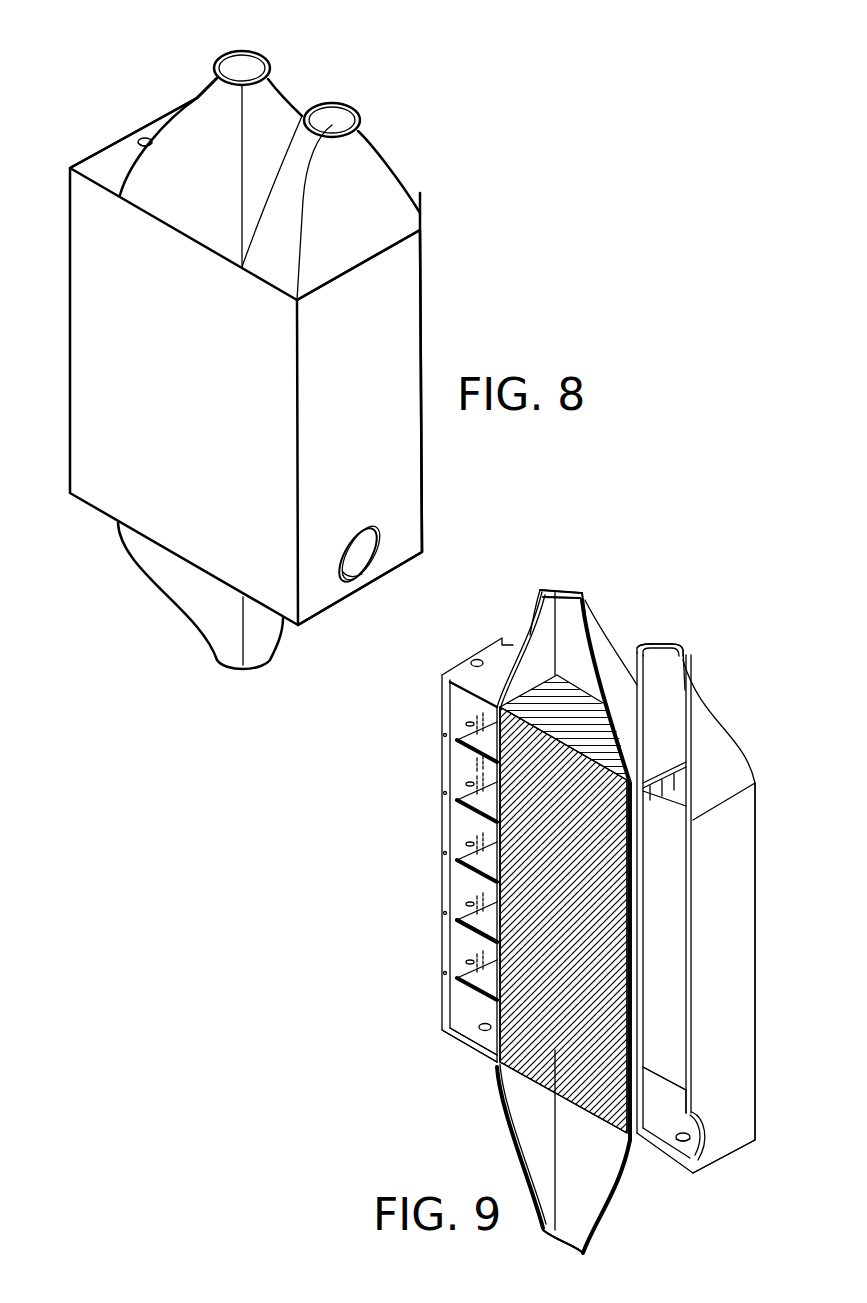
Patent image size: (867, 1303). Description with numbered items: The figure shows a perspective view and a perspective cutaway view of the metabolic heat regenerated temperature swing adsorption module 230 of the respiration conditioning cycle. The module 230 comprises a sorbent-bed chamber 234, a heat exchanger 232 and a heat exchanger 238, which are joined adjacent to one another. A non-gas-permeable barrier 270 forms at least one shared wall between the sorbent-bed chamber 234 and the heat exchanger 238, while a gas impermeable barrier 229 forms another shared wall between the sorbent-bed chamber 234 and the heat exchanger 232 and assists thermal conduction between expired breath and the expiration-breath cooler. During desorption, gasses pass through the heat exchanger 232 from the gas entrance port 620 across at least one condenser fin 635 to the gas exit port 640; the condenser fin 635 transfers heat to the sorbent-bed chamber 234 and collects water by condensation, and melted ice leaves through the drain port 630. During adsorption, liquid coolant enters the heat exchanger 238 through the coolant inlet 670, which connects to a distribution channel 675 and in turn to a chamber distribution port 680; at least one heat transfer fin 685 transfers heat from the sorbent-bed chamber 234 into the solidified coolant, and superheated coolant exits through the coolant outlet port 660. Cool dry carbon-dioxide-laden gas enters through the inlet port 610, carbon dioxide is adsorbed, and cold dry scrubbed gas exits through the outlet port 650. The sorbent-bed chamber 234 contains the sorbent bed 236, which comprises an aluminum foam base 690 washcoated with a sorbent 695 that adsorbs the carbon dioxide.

In FIG. 8, the metabolic heat regenerated temperature swing adsorption module 230 is at (442, 268).
In FIG. 9, the metabolic heat regenerated temperature swing adsorption module 230 is at (712, 672).
In FIG. 8, the heat exchanger 232 is at (407, 423).
In FIG. 9, the heat exchanger 232 is at (710, 1185).
In FIG. 9, the sorbent-bed chamber 234 is at (490, 1110).
In FIG. 9, the sorbent bed 236 is at (583, 1107).
In FIG. 8, the heat exchanger 238 is at (160, 106).
In FIG. 9, the heat exchanger 238 is at (420, 814).
In FIG. 9, the gas impermeable barrier 229 is at (655, 1097).
In FIG. 9, the non-gas-permeable barrier 270 is at (460, 923).
In FIG. 8, the inlet port 610 is at (252, 77).
In FIG. 9, the inlet port 610 is at (573, 590).
In FIG. 8, the gas entrance port 620 is at (332, 120).
In FIG. 9, the gas entrance port 620 is at (677, 648).
In FIG. 9, the drain port 630 is at (683, 1143).
In FIG. 9, the condenser fin 635 is at (638, 785).
In FIG. 8, the gas exit port 640 is at (373, 563).
In FIG. 9, the gas exit port 640 is at (707, 1137).
In FIG. 8, the outlet port 650 is at (233, 667).
In FIG. 9, the outlet port 650 is at (572, 1230).
In FIG. 9, the coolant outlet port 660 is at (450, 1017).
In FIG. 8, the coolant inlet 670 is at (140, 140).
In FIG. 9, the coolant inlet 670 is at (475, 660).
In FIG. 9, the distribution channel 675 is at (473, 767).
In FIG. 9, the chamber distribution port 680 is at (468, 724).
In FIG. 9, the heat transfer fin 685 is at (460, 753).
In FIG. 9, the foam base 690 is at (500, 1087).
In FIG. 9, the sorbent 695 is at (497, 1050).